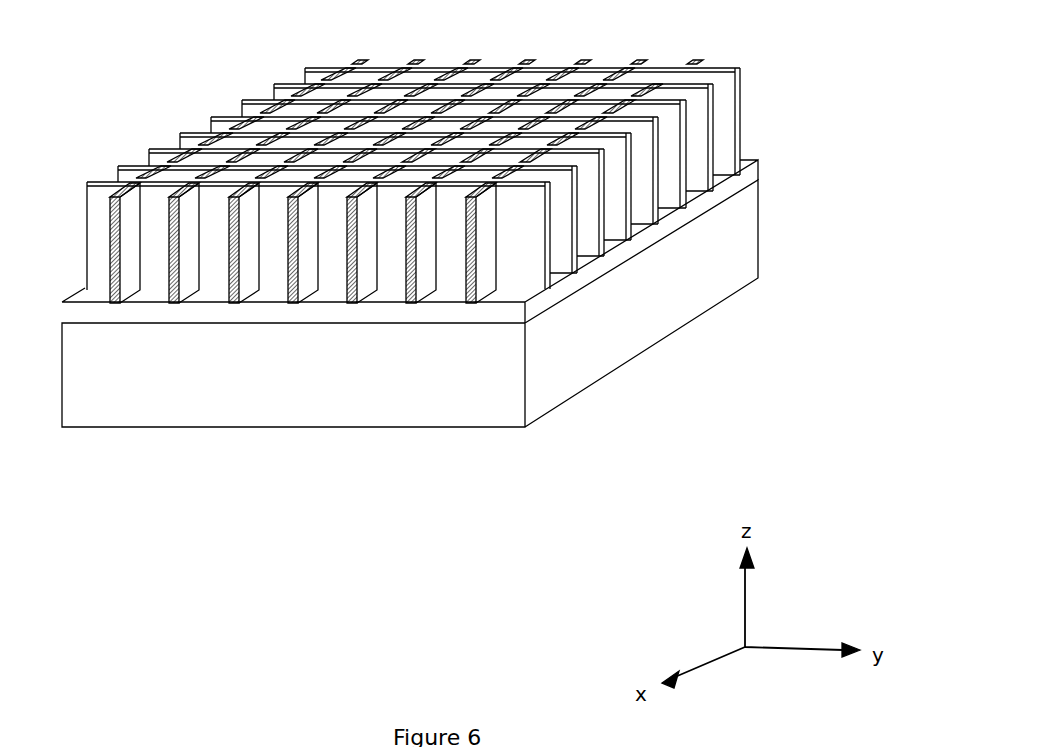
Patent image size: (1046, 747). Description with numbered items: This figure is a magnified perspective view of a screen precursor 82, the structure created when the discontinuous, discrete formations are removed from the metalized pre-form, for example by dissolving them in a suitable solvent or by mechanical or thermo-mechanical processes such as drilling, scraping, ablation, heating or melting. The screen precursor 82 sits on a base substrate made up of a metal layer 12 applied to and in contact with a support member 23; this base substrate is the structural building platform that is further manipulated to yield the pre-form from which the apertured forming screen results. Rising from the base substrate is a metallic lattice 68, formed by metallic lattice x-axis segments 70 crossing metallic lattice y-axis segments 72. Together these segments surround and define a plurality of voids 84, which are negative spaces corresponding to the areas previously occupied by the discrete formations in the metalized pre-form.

The metal layer 12 is at (752, 175).
The support member 23 is at (748, 248).
The metallic lattice 68 is at (431, 299).
The metallic lattice x-axis segments 70 is at (605, 237).
The metallic lattice y-axis segments 72 is at (412, 300).
The screen precursor 82 is at (115, 508).
The voids 84 is at (307, 142).